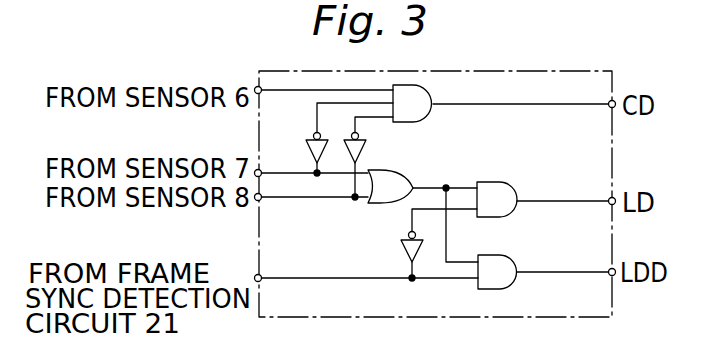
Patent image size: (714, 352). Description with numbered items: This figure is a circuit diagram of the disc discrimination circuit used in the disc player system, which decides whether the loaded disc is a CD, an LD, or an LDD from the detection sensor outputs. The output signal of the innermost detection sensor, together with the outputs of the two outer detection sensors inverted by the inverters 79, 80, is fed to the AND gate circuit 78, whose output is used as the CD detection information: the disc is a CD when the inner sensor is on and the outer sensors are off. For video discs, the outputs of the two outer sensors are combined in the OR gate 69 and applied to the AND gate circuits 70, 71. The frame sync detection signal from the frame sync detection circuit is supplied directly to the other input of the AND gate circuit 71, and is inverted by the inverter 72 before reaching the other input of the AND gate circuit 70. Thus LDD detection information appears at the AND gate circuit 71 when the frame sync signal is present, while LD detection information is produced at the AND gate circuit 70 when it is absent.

The AND gate circuit 78 is at (433, 92).
The inverter 79 is at (307, 150).
The inverter 80 is at (362, 152).
The OR gate 69 is at (403, 170).
The AND gate circuit 70 is at (505, 182).
The AND gate circuit 71 is at (508, 257).
The inverter 72 is at (403, 249).